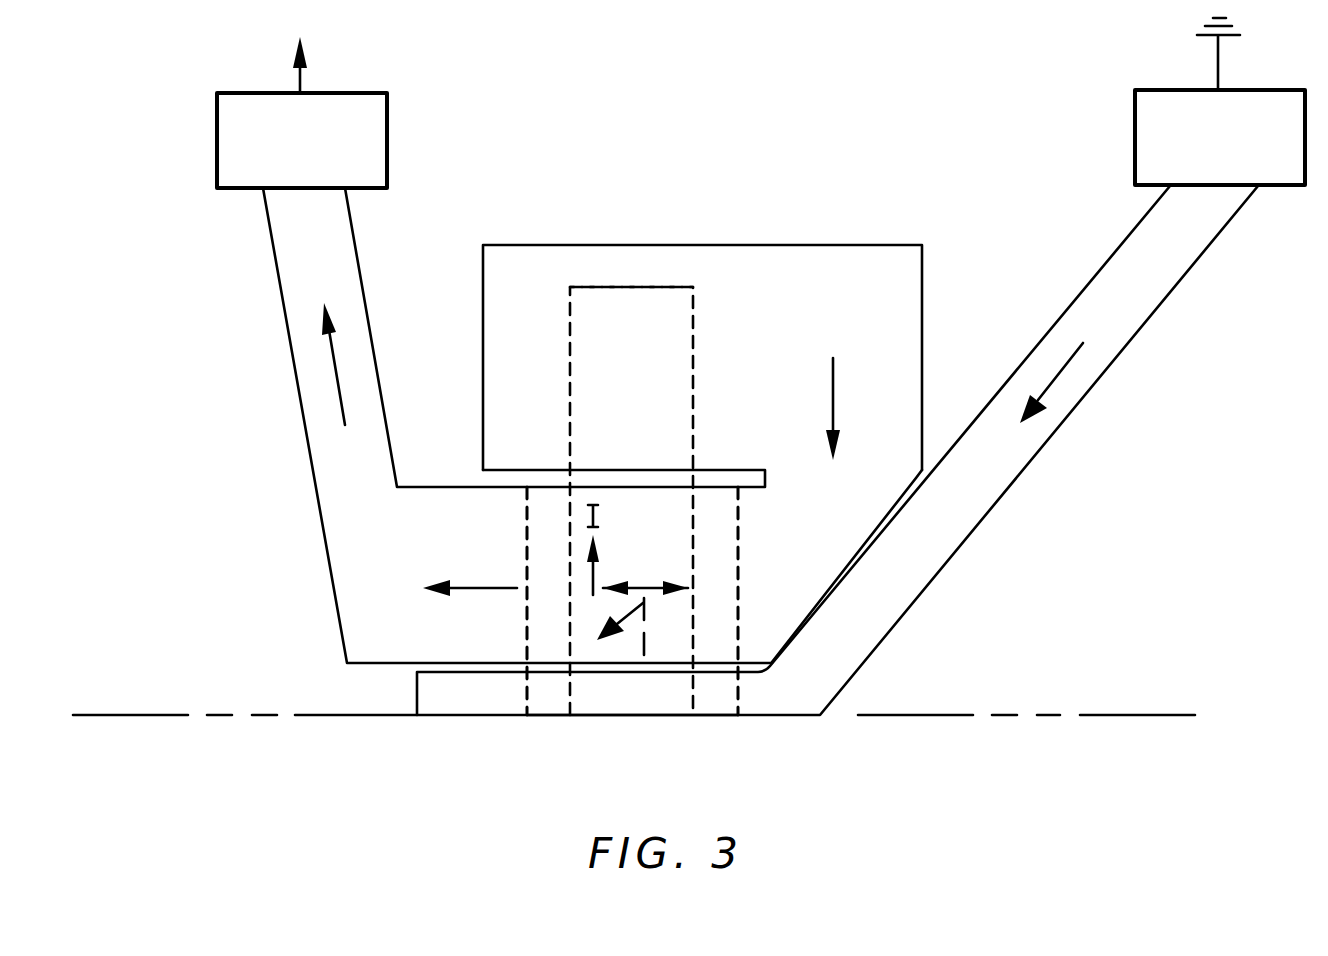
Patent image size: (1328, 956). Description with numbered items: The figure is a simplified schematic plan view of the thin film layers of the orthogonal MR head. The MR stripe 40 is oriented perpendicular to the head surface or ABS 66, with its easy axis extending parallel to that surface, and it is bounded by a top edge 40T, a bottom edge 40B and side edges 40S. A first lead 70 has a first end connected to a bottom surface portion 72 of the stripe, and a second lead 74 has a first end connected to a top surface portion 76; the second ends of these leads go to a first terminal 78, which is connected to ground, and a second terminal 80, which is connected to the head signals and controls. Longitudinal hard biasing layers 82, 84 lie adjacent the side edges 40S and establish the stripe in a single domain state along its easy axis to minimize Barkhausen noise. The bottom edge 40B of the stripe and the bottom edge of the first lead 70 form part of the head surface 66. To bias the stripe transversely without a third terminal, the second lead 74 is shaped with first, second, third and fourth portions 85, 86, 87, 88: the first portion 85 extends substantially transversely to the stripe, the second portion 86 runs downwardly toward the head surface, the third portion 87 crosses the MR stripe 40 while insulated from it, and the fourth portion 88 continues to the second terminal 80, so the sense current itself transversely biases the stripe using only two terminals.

The MR stripe 40 is at (632, 509).
The top edge of MR stripe 40T is at (591, 287).
The side edges of MR stripe 40S is at (568, 540).
The bottom edge of MR stripe 40B is at (641, 716).
The head surface 66 is at (579, 716).
The first lead 70 is at (1150, 340).
The bottom surface portion of MR stripe 72 is at (612, 700).
The second lead 74 is at (462, 342).
The top surface portion of MR stripe 76 is at (657, 308).
The first terminal 78 is at (1258, 90).
The second terminal 80 is at (336, 93).
The longitudinal hard biasing layer 82 is at (540, 622).
The longitudinal hard biasing layer 84 is at (722, 573).
The first portion of second lead 85 is at (632, 257).
The second portion of second lead 86 is at (865, 348).
The third portion of second lead 87 is at (675, 630).
The fourth portion of second lead 88 is at (305, 366).
The air bearing surface ABS is at (218, 718).